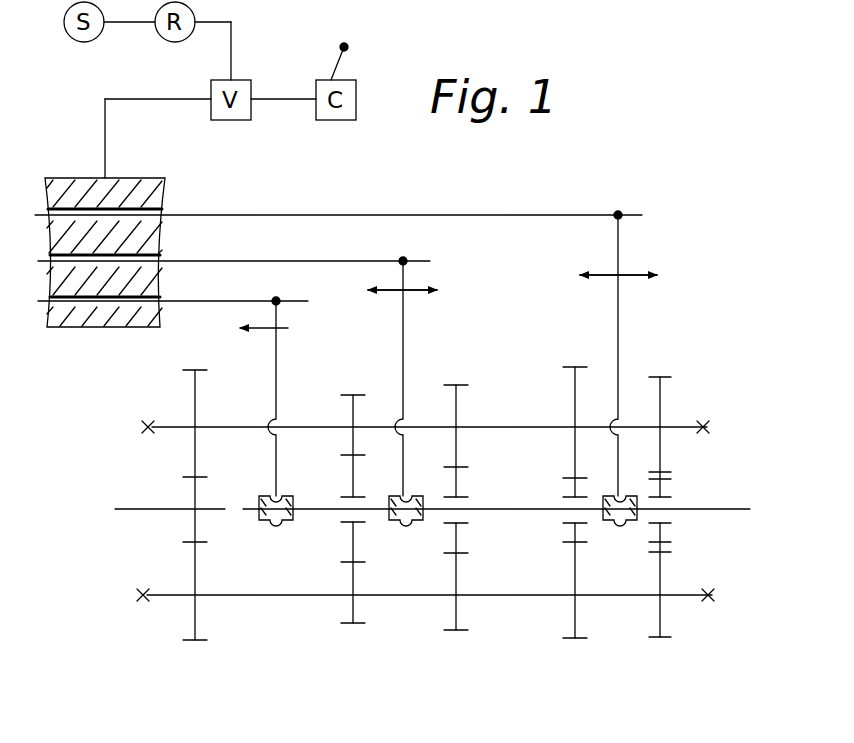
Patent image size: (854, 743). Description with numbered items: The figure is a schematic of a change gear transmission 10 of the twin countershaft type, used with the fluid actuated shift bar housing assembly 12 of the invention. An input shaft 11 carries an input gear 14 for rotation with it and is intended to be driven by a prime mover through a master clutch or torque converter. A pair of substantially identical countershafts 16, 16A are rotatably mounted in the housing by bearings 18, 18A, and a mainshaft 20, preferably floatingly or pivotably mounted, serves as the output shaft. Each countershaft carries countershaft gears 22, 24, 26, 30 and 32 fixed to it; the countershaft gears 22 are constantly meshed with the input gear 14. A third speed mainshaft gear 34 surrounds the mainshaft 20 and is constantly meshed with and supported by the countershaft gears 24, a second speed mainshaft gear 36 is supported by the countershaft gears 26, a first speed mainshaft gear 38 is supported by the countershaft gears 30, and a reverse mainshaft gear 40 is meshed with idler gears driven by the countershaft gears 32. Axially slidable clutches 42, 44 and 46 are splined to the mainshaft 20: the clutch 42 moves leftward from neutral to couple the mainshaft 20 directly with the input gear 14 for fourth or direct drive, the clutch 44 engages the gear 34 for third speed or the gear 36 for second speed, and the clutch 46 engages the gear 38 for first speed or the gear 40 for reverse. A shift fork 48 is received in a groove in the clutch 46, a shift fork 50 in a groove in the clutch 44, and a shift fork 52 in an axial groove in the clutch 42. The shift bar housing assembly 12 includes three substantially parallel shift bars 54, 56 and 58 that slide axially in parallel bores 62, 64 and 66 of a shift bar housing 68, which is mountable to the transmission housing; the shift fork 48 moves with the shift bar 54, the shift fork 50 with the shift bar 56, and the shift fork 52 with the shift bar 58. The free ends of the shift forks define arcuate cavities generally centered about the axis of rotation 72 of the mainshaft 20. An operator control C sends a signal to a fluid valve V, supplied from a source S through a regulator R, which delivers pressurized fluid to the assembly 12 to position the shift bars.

The change gear transmission 10 is at (426, 489).
The input shaft 11 is at (123, 508).
The shift bar housing assembly 12 is at (142, 253).
The input gear 14 is at (196, 530).
The countershaft 16 is at (478, 427).
The countershaft 16A is at (515, 597).
The bearing 18 is at (146, 418).
The bearing 18A is at (138, 598).
The mainshaft 20 is at (718, 508).
The countershaft gear 22 is at (196, 410).
The countershaft gear 24 is at (352, 418).
The countershaft gear 26 is at (456, 420).
The countershaft gear 30 is at (575, 418).
The countershaft gear 32 is at (661, 410).
The third speed mainshaft gear 34 is at (352, 478).
The second speed mainshaft gear 36 is at (458, 487).
The first speed mainshaft gear 38 is at (575, 490).
The reverse mainshaft gear 40 is at (665, 490).
The clutch 42 is at (268, 521).
The clutch 44 is at (394, 521).
The clutch 46 is at (608, 521).
The shift fork 48 is at (619, 345).
The shift fork 50 is at (404, 362).
The shift fork 52 is at (277, 378).
The shift bar 54 is at (421, 215).
The shift bar 56 is at (251, 261).
The shift bar 58 is at (186, 301).
The bore 62 is at (138, 213).
The bore 64 is at (150, 258).
The bore 66 is at (110, 302).
The shift bar housing 68 is at (70, 188).
The axis of rotation 72 is at (233, 47).